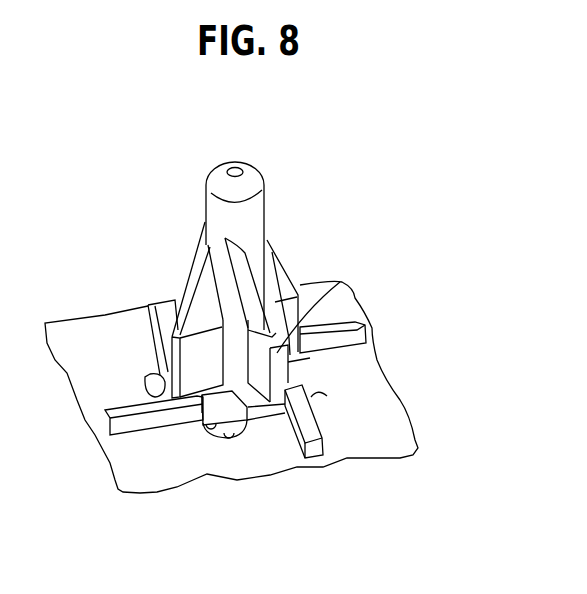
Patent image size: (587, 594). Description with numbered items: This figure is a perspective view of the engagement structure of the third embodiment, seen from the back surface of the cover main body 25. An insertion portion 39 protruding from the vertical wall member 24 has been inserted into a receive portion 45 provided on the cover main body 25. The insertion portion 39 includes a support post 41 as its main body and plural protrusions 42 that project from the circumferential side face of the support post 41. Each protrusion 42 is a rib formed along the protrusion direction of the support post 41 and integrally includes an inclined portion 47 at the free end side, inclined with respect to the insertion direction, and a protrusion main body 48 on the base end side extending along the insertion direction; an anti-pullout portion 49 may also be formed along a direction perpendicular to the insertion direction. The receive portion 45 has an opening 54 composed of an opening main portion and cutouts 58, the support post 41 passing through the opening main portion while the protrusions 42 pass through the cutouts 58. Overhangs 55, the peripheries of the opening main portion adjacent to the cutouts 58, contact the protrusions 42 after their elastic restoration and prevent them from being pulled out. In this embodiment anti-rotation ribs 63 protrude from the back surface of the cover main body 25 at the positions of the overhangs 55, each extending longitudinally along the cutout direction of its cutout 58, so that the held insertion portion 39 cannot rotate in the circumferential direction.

The vertical wall member 24 is at (217, 165).
The insertion portion 39 is at (257, 165).
The support post 41 is at (265, 195).
The inclined portion 47 is at (265, 242).
The protrusion 42 is at (282, 267).
The protrusion main body 48 is at (340, 282).
The anti-rotation rib 63 is at (155, 300).
The overhang 55 is at (258, 440).
The receive portion 45 is at (320, 385).
The cover main body 25 is at (403, 443).
The cutout 58 is at (145, 378).
The opening 54 is at (200, 440).
The anti-pullout portion 49 is at (283, 440).